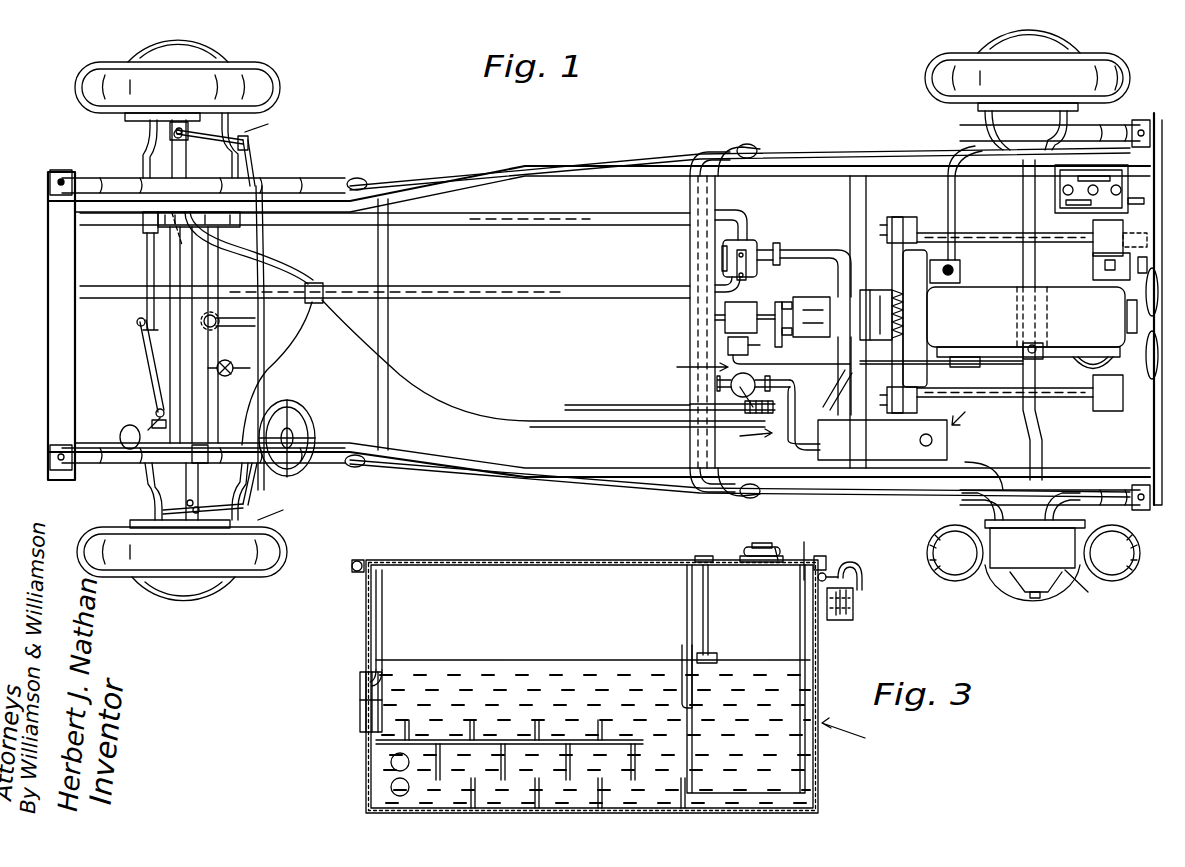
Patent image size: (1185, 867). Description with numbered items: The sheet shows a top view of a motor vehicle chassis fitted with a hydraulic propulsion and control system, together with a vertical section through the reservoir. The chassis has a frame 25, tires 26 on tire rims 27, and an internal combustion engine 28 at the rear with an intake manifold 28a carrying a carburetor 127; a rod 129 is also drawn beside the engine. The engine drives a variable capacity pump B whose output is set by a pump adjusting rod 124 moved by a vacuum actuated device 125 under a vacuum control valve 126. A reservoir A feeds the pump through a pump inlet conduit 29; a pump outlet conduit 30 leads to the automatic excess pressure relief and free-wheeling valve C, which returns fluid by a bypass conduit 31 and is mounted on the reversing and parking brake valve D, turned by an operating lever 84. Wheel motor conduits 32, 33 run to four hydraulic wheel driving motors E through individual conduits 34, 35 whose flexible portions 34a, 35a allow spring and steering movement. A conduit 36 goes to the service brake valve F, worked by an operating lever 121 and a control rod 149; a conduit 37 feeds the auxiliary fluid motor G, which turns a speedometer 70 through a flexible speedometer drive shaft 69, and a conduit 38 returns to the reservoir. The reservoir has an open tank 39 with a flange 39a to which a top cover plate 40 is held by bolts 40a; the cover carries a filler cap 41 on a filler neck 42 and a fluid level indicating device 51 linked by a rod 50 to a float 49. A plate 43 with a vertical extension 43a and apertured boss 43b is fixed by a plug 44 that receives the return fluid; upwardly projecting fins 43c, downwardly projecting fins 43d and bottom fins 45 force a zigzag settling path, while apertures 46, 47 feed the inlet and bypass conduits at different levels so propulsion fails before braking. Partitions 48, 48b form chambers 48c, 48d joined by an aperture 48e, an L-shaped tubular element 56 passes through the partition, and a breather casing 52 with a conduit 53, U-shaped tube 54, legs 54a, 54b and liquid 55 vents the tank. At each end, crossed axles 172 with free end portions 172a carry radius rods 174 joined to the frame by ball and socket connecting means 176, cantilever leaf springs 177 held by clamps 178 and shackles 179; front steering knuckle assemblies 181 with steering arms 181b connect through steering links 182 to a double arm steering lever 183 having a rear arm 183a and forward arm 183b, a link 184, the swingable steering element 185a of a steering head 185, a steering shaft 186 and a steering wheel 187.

In FIG. 1, the frame 25 is at (582, 172).
In FIG. 1, the tires 26 is at (79, 82).
In FIG. 1, the tire rims 27 is at (1000, 565).
In FIG. 1, the internal combustion engine 28 is at (998, 287).
In FIG. 1, the intake manifold 28a is at (1090, 350).
In FIG. 1, the pump inlet conduit 29 is at (826, 402).
In FIG. 1, the pump outlet conduit 30 is at (798, 248).
In FIG. 1, the bypass conduit 31 is at (835, 270).
In FIG. 1, the wheel motor conduit 32 is at (545, 226).
In FIG. 1, the wheel motor conduit 33 is at (588, 294).
In FIG. 1, the individual conduit 34 is at (147, 250).
In FIG. 1, the flexible portion of conduit 34a is at (145, 147).
In FIG. 1, the individual conduit 35 is at (282, 262).
In FIG. 1, the flexible portion of conduit 35a is at (240, 160).
In FIG. 1, the conduit 36 is at (690, 323).
In FIG. 1, the conduit 37 is at (790, 384).
In FIG. 1, the conduit 38 is at (788, 450).
In FIG. 3, the tank 39 is at (818, 772).
In FIG. 3, the flange 39a is at (352, 570).
In FIG. 1, the top cover plate 40 is at (948, 455).
In FIG. 3, the top cover plate 40 is at (515, 562).
In FIG. 3, the bolts 40a is at (360, 562).
In FIG. 1, the filler cap 41 is at (920, 440).
In FIG. 3, the filler cap 41 is at (776, 546).
In FIG. 3, the filler neck 42 is at (758, 547).
In FIG. 3, the plate 43 is at (490, 740).
In FIG. 3, the vertical extension of plate 43a is at (384, 612).
In FIG. 3, the apertured boss 43b is at (366, 672).
In FIG. 3, the upwardly projecting fins 43c is at (600, 725).
In FIG. 3, the downwardly projecting fins 43d is at (628, 760).
In FIG. 3, the plug 44 is at (360, 726).
In FIG. 3, the bottom fins 45 is at (476, 795).
In FIG. 3, the aperture 46 is at (390, 762).
In FIG. 3, the aperture 47 is at (390, 789).
In FIG. 3, the partition 48 is at (688, 600).
In FIG. 3, the partition 48b is at (800, 622).
In FIG. 3, the chamber 48c is at (705, 588).
In FIG. 3, the chamber 48d is at (814, 552).
In FIG. 3, the aperture 48e is at (798, 575).
In FIG. 3, the float 49 is at (716, 655).
In FIG. 3, the rod 50 is at (710, 603).
In FIG. 3, the fluid level indicating device 51 is at (702, 556).
In FIG. 3, the casing 52 is at (854, 605).
In FIG. 3, the conduit 53 is at (831, 575).
In FIG. 3, the U-shaped tube 54 is at (864, 572).
In FIG. 3, the leg of tube 54a is at (848, 618).
In FIG. 3, the leg of tube 54b is at (864, 585).
In FIG. 3, the liquid 55 is at (836, 618).
In FIG. 3, the L-shaped tubular element 56 is at (682, 692).
In FIG. 1, the flexible speedometer drive shaft 69 is at (572, 423).
In FIG. 1, the speedometer 70 is at (227, 360).
In FIG. 1, the operating lever 84 is at (748, 268).
In FIG. 1, the operating lever 121 is at (692, 404).
In FIG. 1, the pump adjusting rod 124 is at (776, 304).
In FIG. 1, the vacuum actuated device 125 is at (724, 308).
In FIG. 1, the vacuum control valve 126 is at (727, 347).
In FIG. 1, the carburetor 127 is at (1024, 345).
In FIG. 1, the rod 129 is at (958, 366).
In FIG. 1, the control rod 149 is at (592, 405).
In FIG. 1, the axles 172 is at (187, 273).
In FIG. 1, the free end portion of axle 172a is at (180, 160).
In FIG. 1, the radius rods 174 is at (312, 180).
In FIG. 1, the ball and socket connecting means 176 is at (362, 180).
In FIG. 1, the cantilever leaf springs 177 is at (130, 178).
In FIG. 1, the clamps 178 is at (58, 168).
In FIG. 1, the shackles 179 is at (965, 160).
In FIG. 1, the steering knuckle assemblies 181 is at (170, 130).
In FIG. 1, the steering arms 181b is at (250, 140).
In FIG. 1, the steering links 182 is at (265, 280).
In FIG. 1, the double arm steering lever 183 is at (200, 318).
In FIG. 1, the rear arm of steering lever 183a is at (238, 314).
In FIG. 1, the forward arm of steering lever 183b is at (137, 322).
In FIG. 1, the link 184 is at (146, 358).
In FIG. 1, the steering head 185 is at (126, 430).
In FIG. 1, the swingable steering element 185a is at (150, 418).
In FIG. 1, the steering shaft 186 is at (200, 465).
In FIG. 1, the steering wheel 187 is at (312, 412).
In FIG. 1, the reservoir A is at (965, 414).
In FIG. 3, the reservoir A is at (850, 734).
In FIG. 1, the pump B is at (867, 283).
In FIG. 1, the automatic excess pressure relief and free-wheeling valve C is at (772, 240).
In FIG. 1, the reversing and parking brake valve D is at (754, 238).
In FIG. 1, the hydraulic wheel driving motors E is at (673, 354).
In FIG. 1, the service brake valve F is at (751, 368).
In FIG. 1, the auxiliary fluid motor G is at (748, 437).